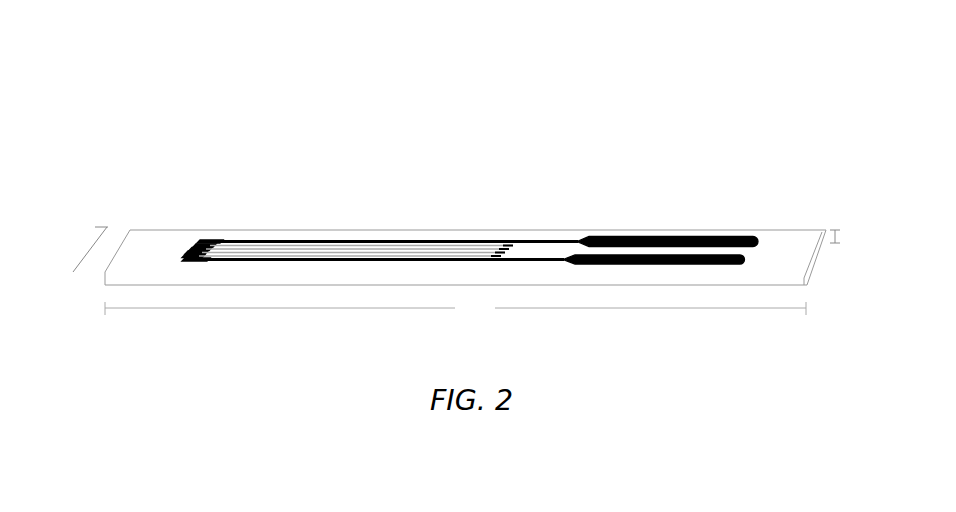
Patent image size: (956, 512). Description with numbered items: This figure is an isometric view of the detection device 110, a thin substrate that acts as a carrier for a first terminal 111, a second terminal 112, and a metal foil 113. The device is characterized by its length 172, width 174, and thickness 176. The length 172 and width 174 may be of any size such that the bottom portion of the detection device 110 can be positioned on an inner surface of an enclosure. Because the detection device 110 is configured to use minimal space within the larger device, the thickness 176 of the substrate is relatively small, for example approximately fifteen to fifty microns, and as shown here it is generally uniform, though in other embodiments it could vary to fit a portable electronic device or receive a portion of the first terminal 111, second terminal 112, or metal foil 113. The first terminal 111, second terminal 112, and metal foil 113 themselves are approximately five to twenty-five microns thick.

The detection device 110 is at (492, 100).
The first terminal 111 is at (695, 237).
The second terminal 112 is at (750, 260).
The metal foil 113 is at (334, 224).
The length 172 is at (455, 307).
The width 174 is at (87, 252).
The thickness 176 is at (837, 232).